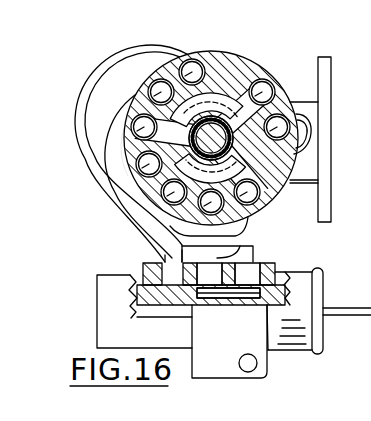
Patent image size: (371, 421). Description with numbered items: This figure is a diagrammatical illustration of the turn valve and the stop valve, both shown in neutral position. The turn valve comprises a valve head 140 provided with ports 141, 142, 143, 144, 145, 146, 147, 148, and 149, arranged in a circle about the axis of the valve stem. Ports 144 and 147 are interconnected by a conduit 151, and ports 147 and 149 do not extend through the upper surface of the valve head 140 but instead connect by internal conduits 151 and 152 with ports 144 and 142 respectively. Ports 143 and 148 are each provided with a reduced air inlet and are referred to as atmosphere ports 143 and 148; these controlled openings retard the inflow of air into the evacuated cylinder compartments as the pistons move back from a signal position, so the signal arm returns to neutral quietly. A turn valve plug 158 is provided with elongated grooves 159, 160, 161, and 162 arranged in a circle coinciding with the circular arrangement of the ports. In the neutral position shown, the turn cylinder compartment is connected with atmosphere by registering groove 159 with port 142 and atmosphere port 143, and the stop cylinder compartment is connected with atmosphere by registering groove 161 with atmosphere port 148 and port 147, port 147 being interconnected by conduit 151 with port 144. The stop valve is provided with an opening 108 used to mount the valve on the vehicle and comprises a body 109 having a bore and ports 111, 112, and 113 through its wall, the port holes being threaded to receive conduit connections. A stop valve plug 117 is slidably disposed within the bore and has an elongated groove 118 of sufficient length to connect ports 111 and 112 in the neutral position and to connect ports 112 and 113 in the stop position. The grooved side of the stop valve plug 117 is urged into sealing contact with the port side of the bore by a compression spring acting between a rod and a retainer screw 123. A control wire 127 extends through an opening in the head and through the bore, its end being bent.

The opening 108 is at (257, 364).
The body 109 is at (112, 325).
The port 111 is at (278, 266).
The port 112 is at (245, 278).
The port 113 is at (142, 267).
The stop valve plug 117 is at (138, 298).
The elongated groove 118 is at (223, 298).
The retainer screw 123 is at (200, 418).
The control wire 127 is at (342, 313).
The valve head 140 is at (253, 77).
The port 141 is at (250, 218).
The port 142 is at (122, 230).
The atmosphere port 143 is at (115, 153).
The port 144 is at (128, 115).
The port 145 is at (116, 63).
The port 146 is at (192, 61).
The port 147 is at (250, 76).
The atmosphere port 148 is at (318, 107).
The port 149 is at (272, 205).
The conduit 151 is at (133, 47).
The internal conduit 152 is at (309, 142).
The turn valve plug 158 is at (125, 88).
The elongated groove 159 is at (92, 200).
The elongated groove 160 is at (226, 62).
The elongated groove 161 is at (284, 97).
The elongated groove 162 is at (322, 182).